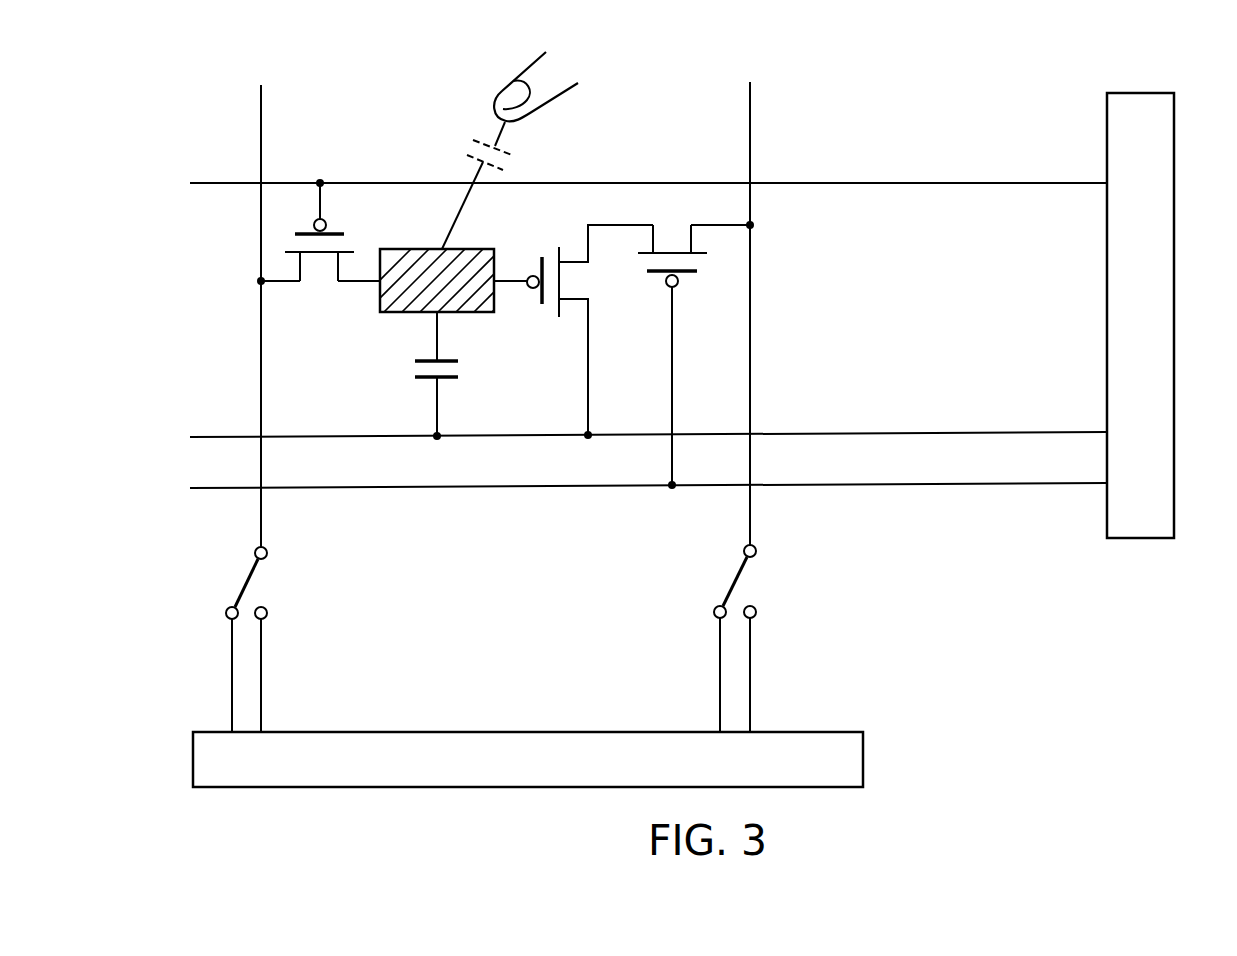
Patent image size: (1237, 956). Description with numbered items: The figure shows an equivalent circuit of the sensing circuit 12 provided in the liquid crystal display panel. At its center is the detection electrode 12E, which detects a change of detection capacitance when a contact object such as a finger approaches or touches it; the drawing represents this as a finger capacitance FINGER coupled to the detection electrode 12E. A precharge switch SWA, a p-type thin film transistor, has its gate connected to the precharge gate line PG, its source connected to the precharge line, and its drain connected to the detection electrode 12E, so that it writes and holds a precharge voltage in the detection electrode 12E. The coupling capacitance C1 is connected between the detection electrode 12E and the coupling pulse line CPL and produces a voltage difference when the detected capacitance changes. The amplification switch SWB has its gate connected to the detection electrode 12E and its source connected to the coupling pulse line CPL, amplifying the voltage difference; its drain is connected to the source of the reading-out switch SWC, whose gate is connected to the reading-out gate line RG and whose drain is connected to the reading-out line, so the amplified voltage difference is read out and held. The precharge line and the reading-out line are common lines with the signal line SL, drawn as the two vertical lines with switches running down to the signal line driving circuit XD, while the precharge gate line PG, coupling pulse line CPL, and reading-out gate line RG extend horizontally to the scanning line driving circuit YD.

The sensing circuit 12 is at (812, 80).
The detection electrode 12E is at (485, 314).
The precharge switch SWA is at (320, 279).
The amplification switch SWB is at (576, 286).
The reading-out switch SWC is at (671, 232).
The coupling capacitance C1 is at (412, 370).
The precharge gate line PG is at (648, 168).
The coupling pulse line CPL is at (648, 420).
The reading-out gate line RG is at (648, 472).
The signal line SL is at (527, 610).
The signal line driving circuit XD is at (548, 731).
The scanning line driving circuit YD is at (1175, 146).
The finger capacitance FINGER is at (452, 150).